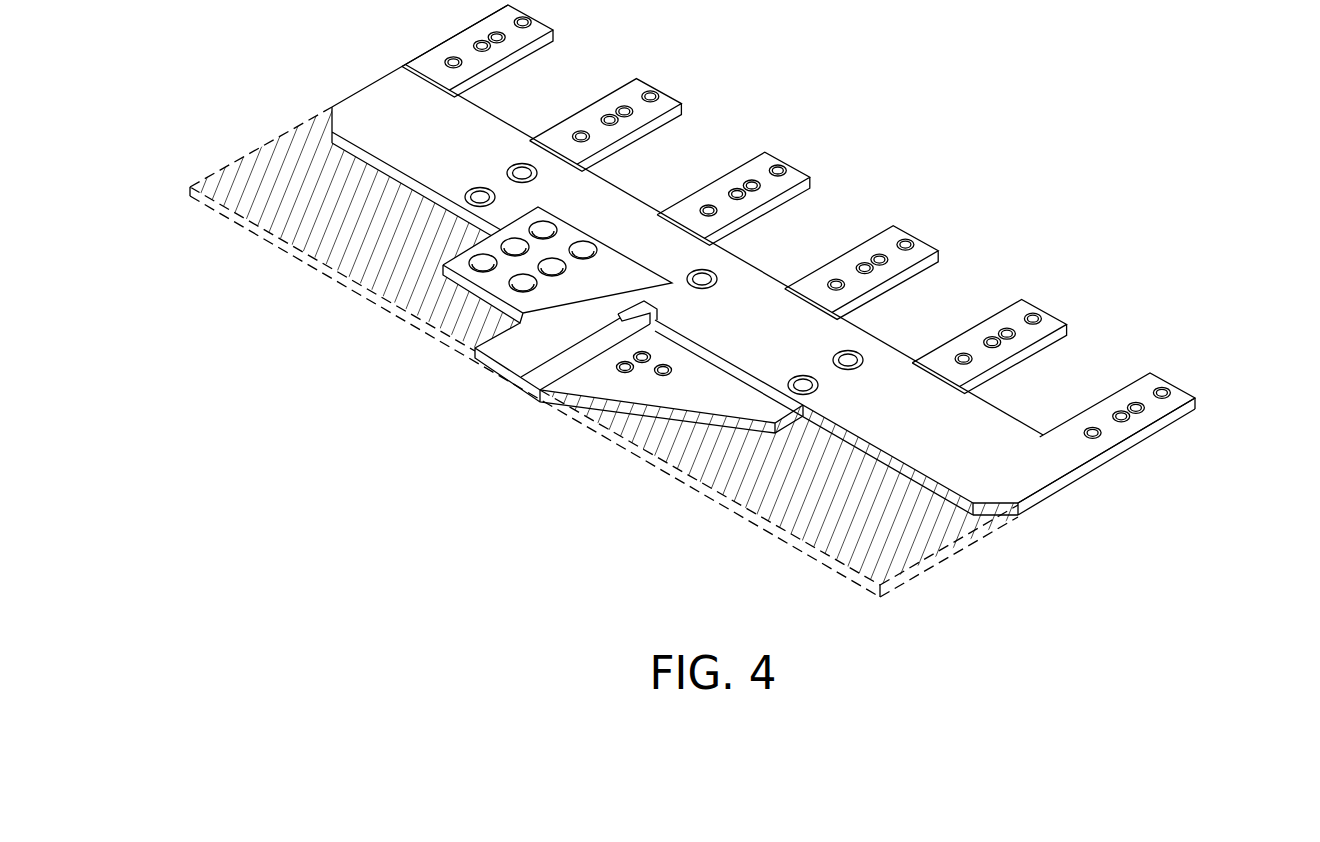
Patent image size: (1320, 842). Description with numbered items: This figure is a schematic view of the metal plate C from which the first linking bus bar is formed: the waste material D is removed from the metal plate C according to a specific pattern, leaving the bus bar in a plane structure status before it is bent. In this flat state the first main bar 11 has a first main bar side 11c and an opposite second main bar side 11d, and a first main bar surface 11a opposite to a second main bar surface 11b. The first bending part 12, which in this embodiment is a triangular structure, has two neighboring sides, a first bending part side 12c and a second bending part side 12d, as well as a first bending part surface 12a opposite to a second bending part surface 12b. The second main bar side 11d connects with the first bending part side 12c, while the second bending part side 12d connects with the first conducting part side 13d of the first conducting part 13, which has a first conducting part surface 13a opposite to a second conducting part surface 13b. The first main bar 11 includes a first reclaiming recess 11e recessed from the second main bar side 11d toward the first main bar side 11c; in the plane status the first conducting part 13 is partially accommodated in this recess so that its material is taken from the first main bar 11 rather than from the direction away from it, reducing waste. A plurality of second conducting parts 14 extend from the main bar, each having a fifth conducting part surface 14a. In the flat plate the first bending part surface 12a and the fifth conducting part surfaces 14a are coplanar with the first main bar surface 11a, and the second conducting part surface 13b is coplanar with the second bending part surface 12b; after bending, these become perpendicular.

The first main bar 11 is at (763, 339).
The first main bar surface 11a is at (1045, 480).
The second main bar surface 11b is at (1029, 435).
The first main bar side 11c is at (1062, 493).
The second main bar side 11d is at (944, 512).
The first reclaiming recess 11e is at (641, 300).
The first bending part 12 is at (626, 465).
The first bending part surface 12a is at (602, 392).
The second bending part surface 12b is at (722, 367).
The first bending part side 12c is at (635, 393).
The second bending part side 12d is at (560, 380).
The first conducting part 13 is at (486, 345).
The first conducting part surface 13a is at (393, 303).
The second conducting part surface 13b is at (447, 320).
The first conducting part side 13d is at (520, 340).
The second conducting parts 14 is at (1149, 408).
The fifth conducting part surface 14a is at (1175, 405).
The metal plate C is at (879, 111).
The waste material D is at (282, 214).